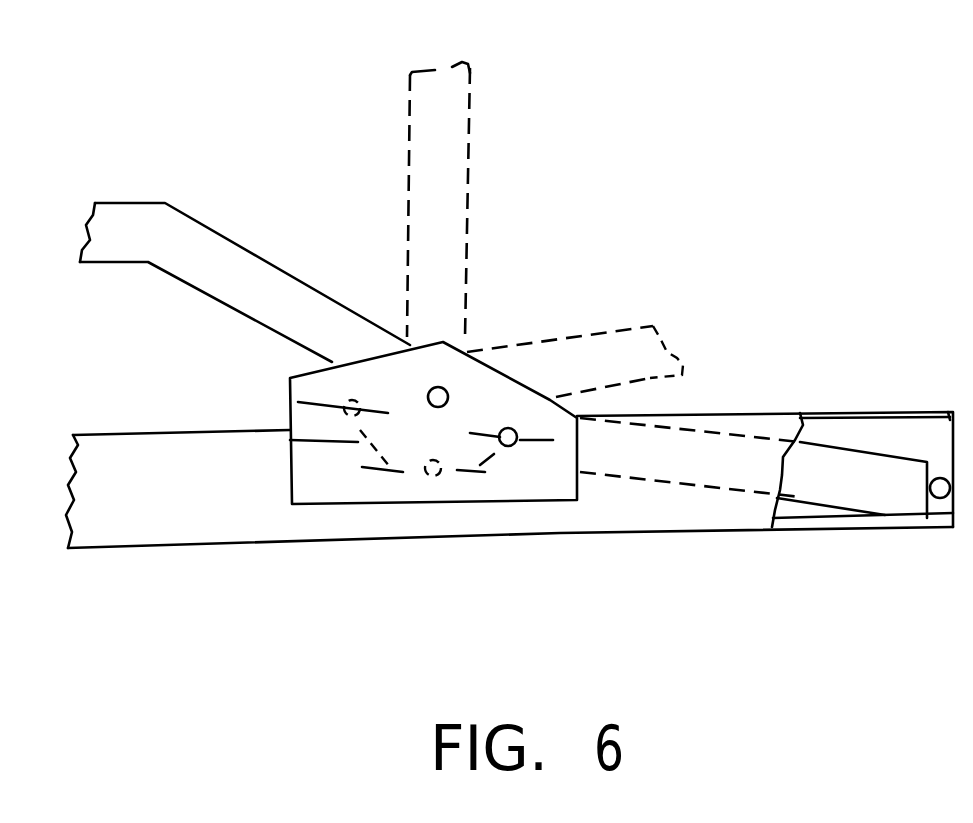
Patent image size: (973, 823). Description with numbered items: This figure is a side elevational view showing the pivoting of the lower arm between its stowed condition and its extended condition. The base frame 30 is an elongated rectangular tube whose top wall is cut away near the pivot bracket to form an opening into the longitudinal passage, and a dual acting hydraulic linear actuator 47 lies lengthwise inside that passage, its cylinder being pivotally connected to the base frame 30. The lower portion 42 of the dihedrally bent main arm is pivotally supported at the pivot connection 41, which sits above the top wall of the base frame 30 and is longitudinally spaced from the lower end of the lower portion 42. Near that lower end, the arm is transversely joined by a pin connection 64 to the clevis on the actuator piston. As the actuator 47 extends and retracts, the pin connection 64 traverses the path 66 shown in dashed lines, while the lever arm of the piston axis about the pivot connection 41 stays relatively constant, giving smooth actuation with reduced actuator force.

The base frame 30 is at (105, 537).
The pivot connection 41 is at (443, 389).
The lower portion 42 is at (217, 280).
The hydraulic linear actuator 47 is at (820, 478).
The pin connection 64 is at (347, 400).
The path 66 is at (290, 437).